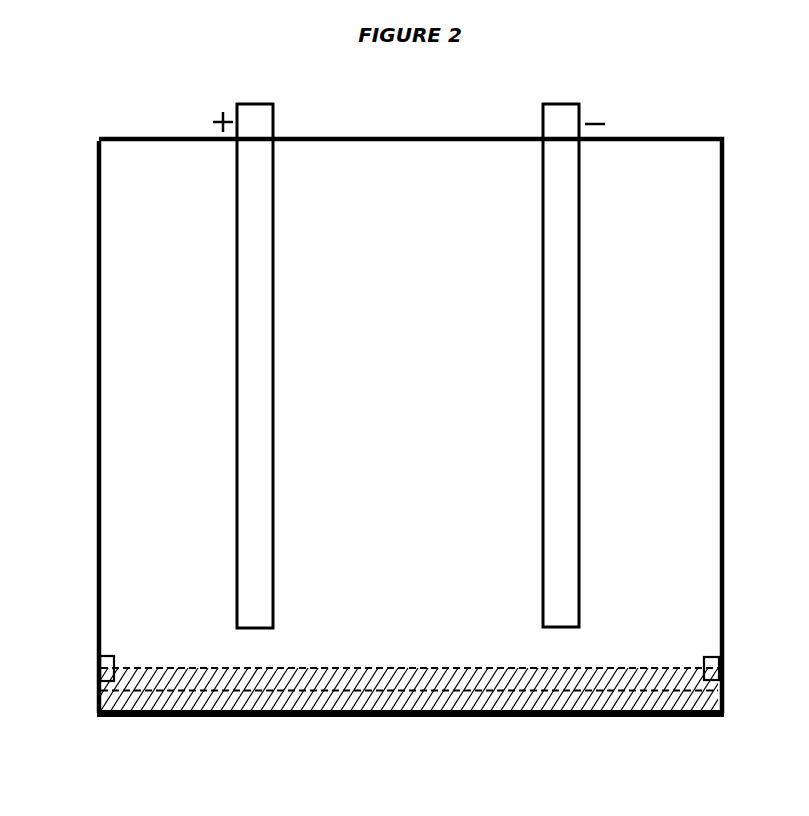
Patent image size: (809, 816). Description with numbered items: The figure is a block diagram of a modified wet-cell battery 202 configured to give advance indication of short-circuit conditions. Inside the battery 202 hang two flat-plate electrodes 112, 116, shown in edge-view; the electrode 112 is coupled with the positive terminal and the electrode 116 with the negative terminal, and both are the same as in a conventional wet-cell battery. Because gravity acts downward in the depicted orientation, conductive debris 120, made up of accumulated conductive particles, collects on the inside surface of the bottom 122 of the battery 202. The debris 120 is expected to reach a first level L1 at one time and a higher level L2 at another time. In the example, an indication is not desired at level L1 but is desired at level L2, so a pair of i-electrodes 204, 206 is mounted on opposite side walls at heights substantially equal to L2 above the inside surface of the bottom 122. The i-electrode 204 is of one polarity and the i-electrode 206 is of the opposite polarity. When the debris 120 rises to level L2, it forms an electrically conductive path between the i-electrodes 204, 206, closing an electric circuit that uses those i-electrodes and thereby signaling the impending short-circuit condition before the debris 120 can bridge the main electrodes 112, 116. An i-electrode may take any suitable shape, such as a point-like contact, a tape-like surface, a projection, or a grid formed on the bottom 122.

The battery 202 is at (724, 271).
The electrode 112 is at (264, 335).
The electrode 116 is at (552, 334).
The debris 120 is at (628, 688).
The bottom 122 is at (723, 711).
The i-electrode 204 is at (722, 660).
The i-electrode 206 is at (100, 661).
The level L1 is at (304, 691).
The level L2 is at (193, 668).